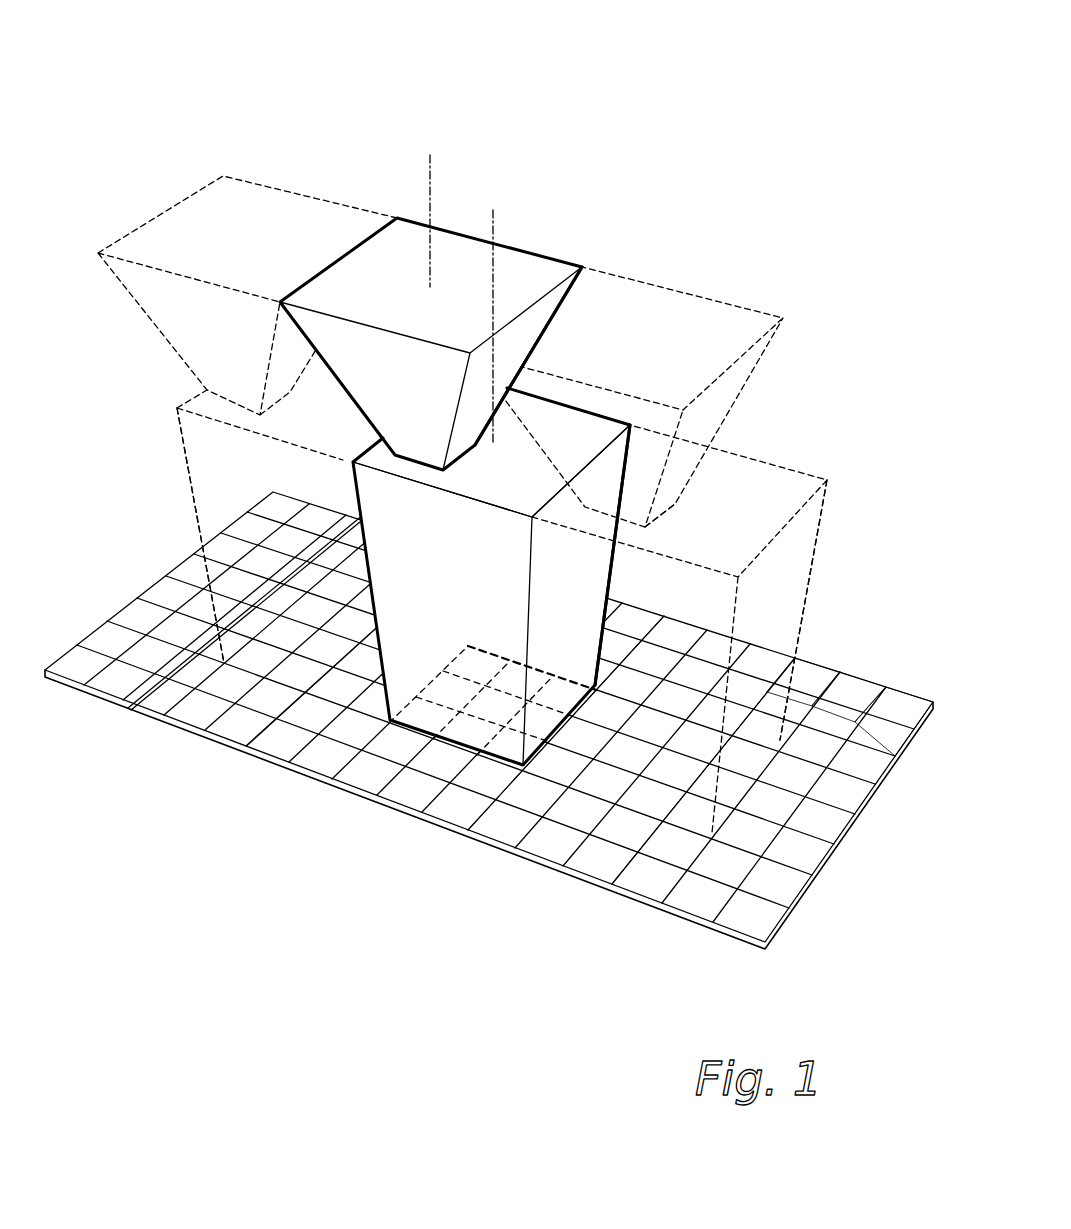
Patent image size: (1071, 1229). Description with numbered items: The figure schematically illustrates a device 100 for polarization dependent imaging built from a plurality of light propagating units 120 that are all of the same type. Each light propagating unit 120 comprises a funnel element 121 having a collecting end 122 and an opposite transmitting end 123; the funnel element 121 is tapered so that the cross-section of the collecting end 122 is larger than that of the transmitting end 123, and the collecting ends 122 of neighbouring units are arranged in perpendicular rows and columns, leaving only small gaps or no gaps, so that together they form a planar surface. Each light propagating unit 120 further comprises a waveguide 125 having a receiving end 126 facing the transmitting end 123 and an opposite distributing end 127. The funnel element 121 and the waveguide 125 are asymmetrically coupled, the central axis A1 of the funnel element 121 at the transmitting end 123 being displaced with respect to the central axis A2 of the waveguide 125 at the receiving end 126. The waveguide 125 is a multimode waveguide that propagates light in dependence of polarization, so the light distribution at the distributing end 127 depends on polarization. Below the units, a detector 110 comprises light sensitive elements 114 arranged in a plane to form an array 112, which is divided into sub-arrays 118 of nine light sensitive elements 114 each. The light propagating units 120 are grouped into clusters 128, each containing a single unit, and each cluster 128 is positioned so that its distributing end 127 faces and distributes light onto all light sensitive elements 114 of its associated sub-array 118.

The device for polarization dependent imaging 100 is at (747, 123).
The detector 110 is at (45, 673).
The array of light sensitive elements 112 is at (88, 667).
The light sensitive element 114 is at (805, 847).
The sub-array of light sensitive elements 118 is at (272, 683).
The light propagating unit 120 is at (374, 104).
The funnel element 121 is at (537, 318).
The collecting end 122 is at (367, 278).
The transmitting end 123 is at (153, 686).
The waveguide 125 is at (582, 573).
The receiving end 126 is at (632, 460).
The distributing end 127 is at (468, 735).
The cluster of light propagating units 128 is at (178, 440).
The central axis of the funnel element A1 is at (432, 188).
The central axis of the waveguide A2 is at (497, 225).